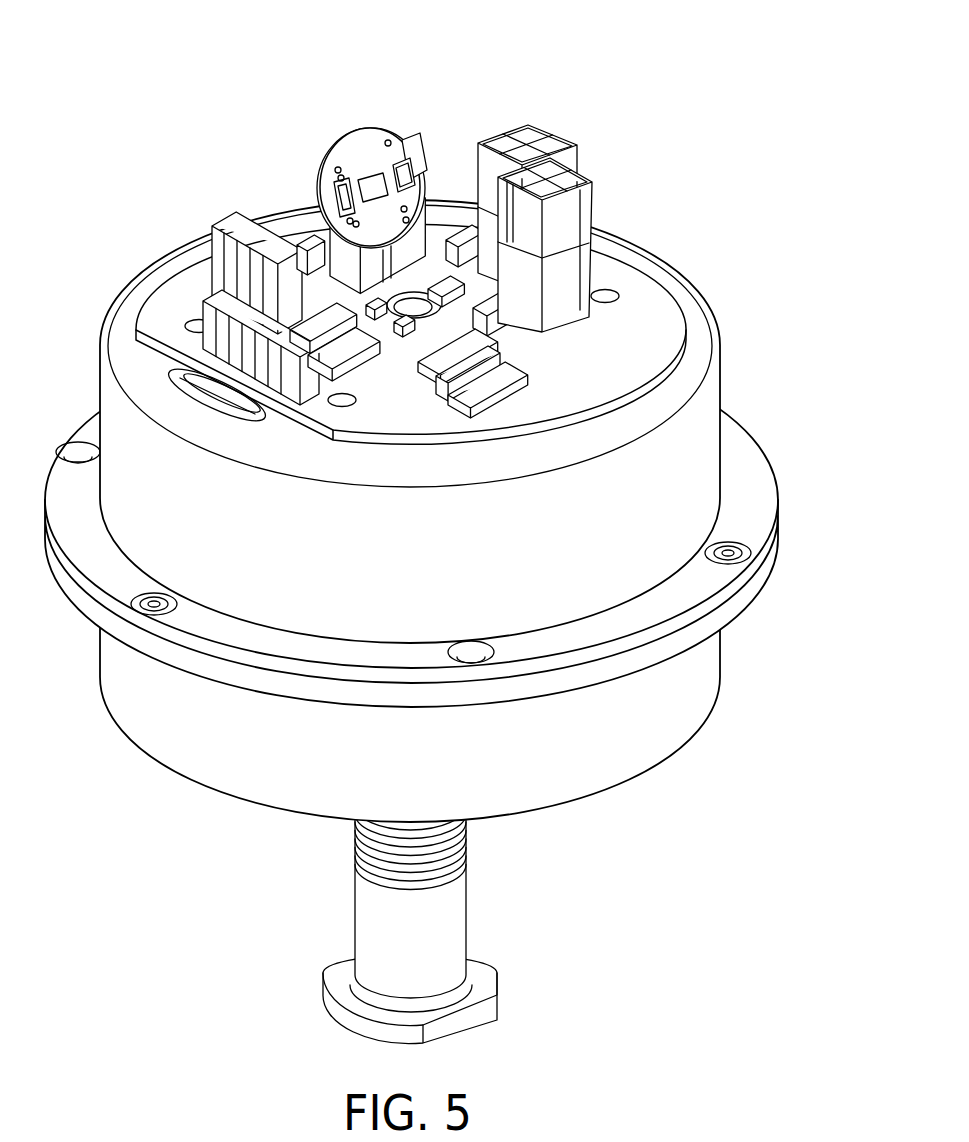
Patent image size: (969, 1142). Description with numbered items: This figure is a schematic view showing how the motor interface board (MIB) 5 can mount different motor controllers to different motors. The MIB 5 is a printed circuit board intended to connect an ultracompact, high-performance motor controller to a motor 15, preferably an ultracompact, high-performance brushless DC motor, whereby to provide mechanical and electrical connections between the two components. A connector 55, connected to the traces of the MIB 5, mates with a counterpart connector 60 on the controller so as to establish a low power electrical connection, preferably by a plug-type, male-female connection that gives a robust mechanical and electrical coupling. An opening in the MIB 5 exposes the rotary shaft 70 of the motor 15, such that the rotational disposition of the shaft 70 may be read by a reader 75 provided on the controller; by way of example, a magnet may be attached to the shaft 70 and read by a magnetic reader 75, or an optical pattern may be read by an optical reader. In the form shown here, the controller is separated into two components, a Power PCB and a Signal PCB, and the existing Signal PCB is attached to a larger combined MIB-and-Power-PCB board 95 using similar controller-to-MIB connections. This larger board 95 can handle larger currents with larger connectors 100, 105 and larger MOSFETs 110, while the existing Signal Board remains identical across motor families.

The motor interface board 5 is at (327, 148).
The motor 15 is at (120, 330).
The connector 55 is at (438, 275).
The counterpart connector 60 is at (402, 138).
The rotary shaft 70 is at (418, 313).
The reader 75 is at (373, 180).
The combined MIB and Power PCB board 95 is at (650, 298).
The connector 100 is at (563, 130).
The connector 105 is at (232, 225).
The MOSFETs 110 is at (503, 382).